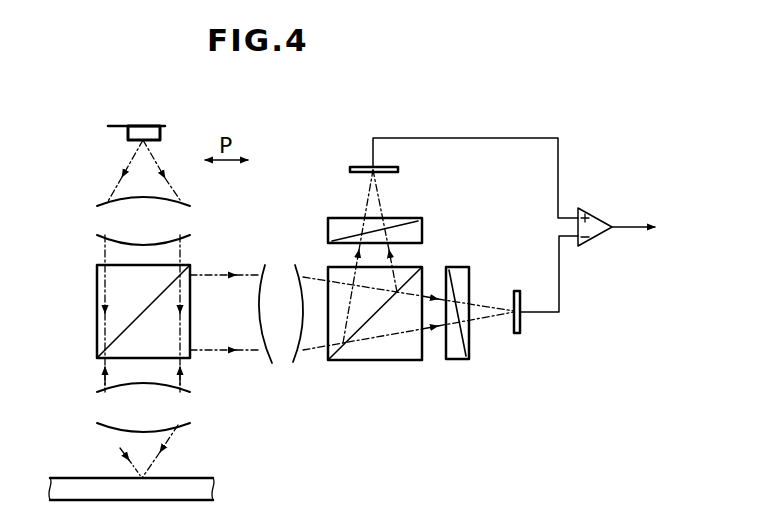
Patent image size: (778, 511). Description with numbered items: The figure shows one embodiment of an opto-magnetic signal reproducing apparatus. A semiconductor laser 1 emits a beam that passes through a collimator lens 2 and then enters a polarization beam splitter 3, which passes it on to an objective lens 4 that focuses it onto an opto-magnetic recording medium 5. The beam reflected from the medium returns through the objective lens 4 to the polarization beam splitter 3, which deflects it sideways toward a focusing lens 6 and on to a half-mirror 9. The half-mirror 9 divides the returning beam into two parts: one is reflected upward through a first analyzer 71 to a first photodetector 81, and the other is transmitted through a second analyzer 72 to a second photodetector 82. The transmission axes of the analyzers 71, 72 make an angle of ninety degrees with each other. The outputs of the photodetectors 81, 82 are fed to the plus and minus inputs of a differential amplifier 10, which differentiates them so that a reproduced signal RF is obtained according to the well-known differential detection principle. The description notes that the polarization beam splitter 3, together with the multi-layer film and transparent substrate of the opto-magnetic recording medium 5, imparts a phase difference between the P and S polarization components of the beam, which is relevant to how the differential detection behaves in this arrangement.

The semiconductor laser 1 is at (160, 133).
The collimator lens 2 is at (183, 223).
The polarization beam splitter 3 is at (97, 327).
The objective lens 4 is at (180, 410).
The opto-magnetic recording medium 5 is at (213, 493).
The focusing lens 6 is at (277, 288).
The half-mirror 9 is at (387, 361).
The analyzer 71 is at (422, 232).
The analyzer 72 is at (457, 361).
The photodetector 81 is at (398, 170).
The photodetector 82 is at (518, 333).
The differential amplifier 10 is at (594, 246).